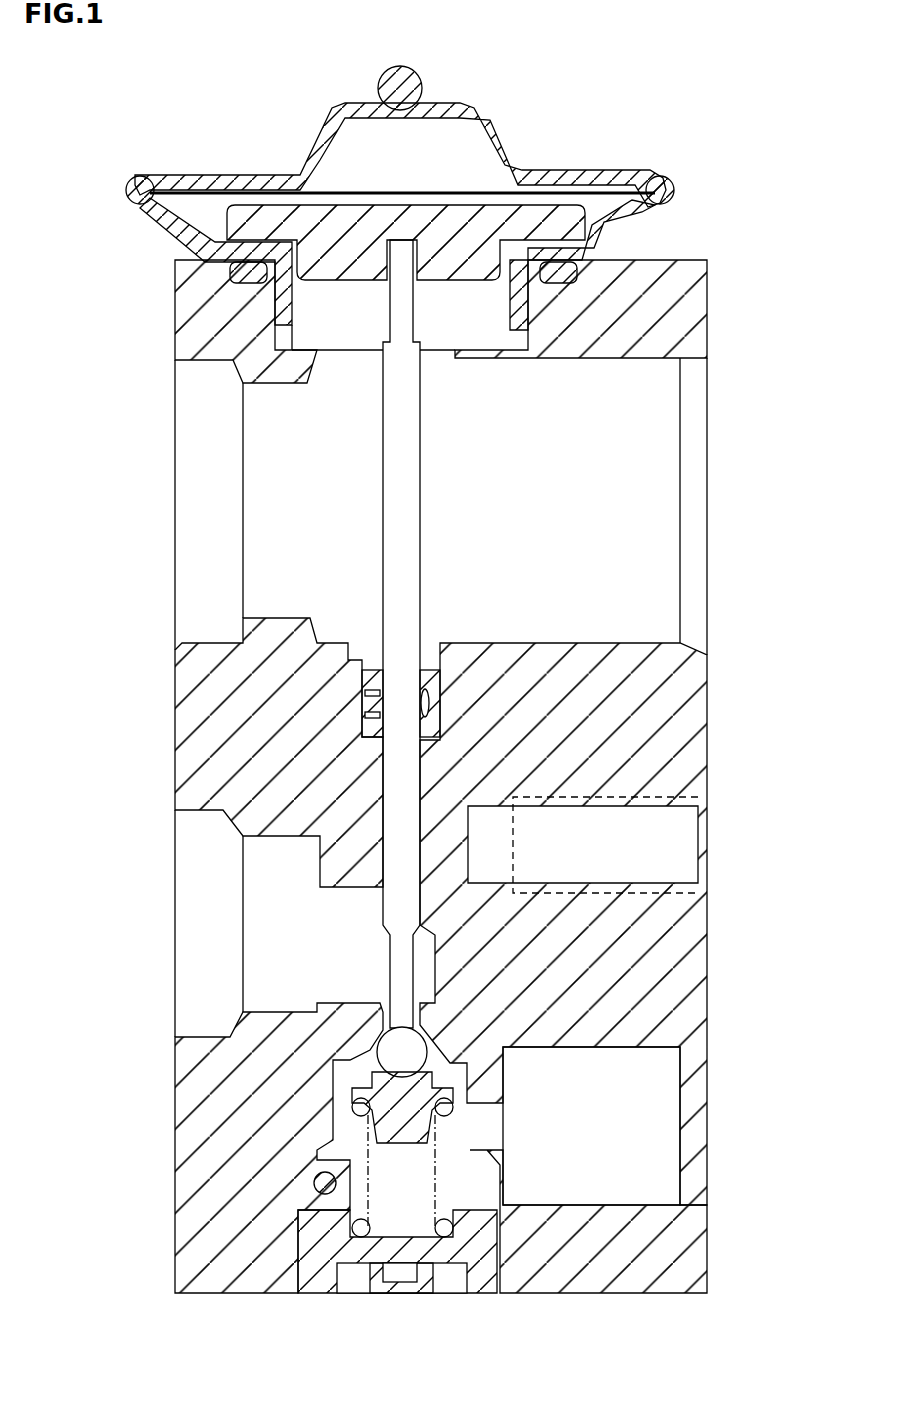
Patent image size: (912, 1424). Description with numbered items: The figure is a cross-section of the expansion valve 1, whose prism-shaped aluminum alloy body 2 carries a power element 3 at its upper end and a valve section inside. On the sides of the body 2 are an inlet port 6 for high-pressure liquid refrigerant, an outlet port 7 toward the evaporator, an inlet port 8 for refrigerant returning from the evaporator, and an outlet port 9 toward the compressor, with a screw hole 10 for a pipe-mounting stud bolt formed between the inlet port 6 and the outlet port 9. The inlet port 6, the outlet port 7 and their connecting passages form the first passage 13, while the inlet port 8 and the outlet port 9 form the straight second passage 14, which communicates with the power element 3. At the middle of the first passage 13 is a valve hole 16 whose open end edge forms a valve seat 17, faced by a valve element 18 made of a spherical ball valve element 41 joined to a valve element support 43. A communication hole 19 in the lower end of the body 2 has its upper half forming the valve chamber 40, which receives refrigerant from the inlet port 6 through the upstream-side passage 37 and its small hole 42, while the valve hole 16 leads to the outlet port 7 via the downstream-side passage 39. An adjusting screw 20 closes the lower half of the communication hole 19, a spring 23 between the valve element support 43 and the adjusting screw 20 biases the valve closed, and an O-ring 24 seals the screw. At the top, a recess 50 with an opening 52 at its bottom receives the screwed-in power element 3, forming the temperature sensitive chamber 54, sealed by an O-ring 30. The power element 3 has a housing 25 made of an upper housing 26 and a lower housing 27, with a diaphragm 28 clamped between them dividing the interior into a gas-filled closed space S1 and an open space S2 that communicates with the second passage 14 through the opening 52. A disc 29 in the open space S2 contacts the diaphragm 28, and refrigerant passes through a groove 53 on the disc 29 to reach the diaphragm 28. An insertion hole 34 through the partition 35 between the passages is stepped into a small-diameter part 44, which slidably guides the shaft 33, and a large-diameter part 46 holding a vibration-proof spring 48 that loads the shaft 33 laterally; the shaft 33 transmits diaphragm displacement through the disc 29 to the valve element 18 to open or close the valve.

The expansion valve 1 is at (600, 157).
The body 2 is at (703, 273).
The power element 3 is at (372, 200).
The inlet port 6 is at (693, 1105).
The outlet port 7 is at (207, 873).
The inlet port 8 is at (197, 470).
The outlet port 9 is at (697, 415).
The screw hole 10 is at (680, 800).
The first passage 13 is at (650, 1068).
The second passage 14 is at (633, 473).
The valve hole 16 is at (370, 1003).
The valve seat 17 is at (432, 1020).
The valve element 18 is at (260, 1042).
The communication hole 19 is at (340, 1163).
The adjusting screw 20 is at (507, 1258).
The spring 23 is at (345, 1130).
The O-ring 24 is at (322, 1182).
The housing 25 is at (51, 180).
The upper housing 26 is at (200, 172).
The lower housing 27 is at (217, 221).
The diaphragm 28 is at (597, 185).
The disc 29 is at (232, 272).
The O-ring 30 is at (270, 262).
The shaft 33 is at (420, 588).
The insertion hole 34 is at (251, 679).
The partition 35 is at (483, 643).
The upstream-side passage 37 is at (603, 1112).
The downstream-side passage 39 is at (280, 925).
The valve chamber 40 is at (360, 1085).
The ball valve element 41 is at (375, 1055).
The small hole 42 is at (488, 1130).
The valve element support 43 is at (368, 1065).
The small-diameter part 44 is at (387, 763).
The large-diameter part 46 is at (363, 697).
The vibration-proof spring 48 is at (363, 680).
The recess 50 is at (706, 286).
The opening 52 is at (500, 343).
The groove 53 is at (577, 254).
The temperature sensitive chamber 54 is at (338, 305).
The closed space S1 is at (330, 165).
The open space S2 is at (215, 228).